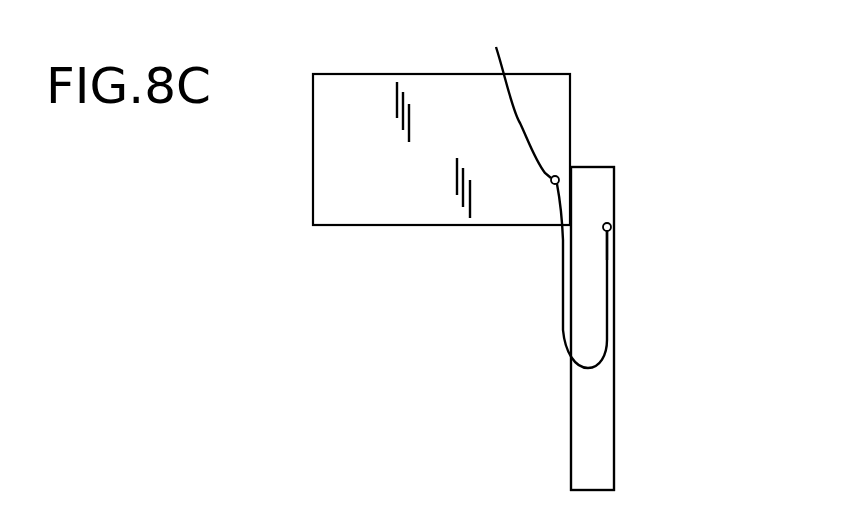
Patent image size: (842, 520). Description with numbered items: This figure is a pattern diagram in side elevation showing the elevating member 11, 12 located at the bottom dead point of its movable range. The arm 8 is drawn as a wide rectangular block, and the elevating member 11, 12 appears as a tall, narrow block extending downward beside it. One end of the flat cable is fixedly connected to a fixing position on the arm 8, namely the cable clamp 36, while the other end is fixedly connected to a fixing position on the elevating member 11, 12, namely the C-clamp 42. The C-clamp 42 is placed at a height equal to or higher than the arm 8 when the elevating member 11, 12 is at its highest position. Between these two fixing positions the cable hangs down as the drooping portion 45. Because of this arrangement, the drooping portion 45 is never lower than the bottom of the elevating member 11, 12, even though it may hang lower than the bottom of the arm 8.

The arm 8 is at (370, 73).
The elevating member 11 is at (606, 178).
The elevating member 12 is at (592, 328).
The cable clamp 36 is at (520, 100).
The C-clamp 42 is at (611, 226).
The drooping portion 45 is at (561, 252).